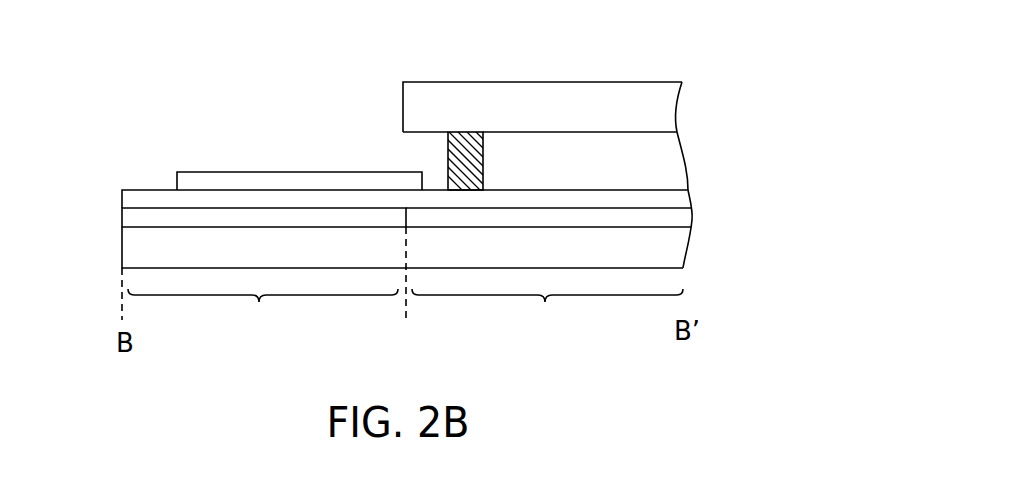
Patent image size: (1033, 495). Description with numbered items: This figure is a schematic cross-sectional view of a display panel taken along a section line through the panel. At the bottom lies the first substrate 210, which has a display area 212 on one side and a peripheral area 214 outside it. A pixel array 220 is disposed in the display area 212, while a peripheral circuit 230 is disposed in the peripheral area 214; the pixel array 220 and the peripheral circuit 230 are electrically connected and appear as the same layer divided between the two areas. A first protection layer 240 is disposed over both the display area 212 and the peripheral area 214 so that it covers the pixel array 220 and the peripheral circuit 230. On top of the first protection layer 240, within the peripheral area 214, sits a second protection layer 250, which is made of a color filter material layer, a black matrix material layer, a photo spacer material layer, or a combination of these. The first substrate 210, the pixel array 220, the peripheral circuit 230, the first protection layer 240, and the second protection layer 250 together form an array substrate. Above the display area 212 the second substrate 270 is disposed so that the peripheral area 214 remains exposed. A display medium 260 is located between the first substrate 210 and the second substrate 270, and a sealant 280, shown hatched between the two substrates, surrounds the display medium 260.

The first substrate 210 is at (680, 249).
The display area 212 is at (547, 312).
The peripheral area 214 is at (263, 313).
The pixel array 220 is at (678, 218).
The peripheral circuit 230 is at (127, 219).
The first protection layer 240 is at (130, 202).
The second protection layer 250 is at (192, 177).
The display medium 260 is at (673, 162).
The second substrate 270 is at (670, 104).
The sealant 280 is at (463, 133).